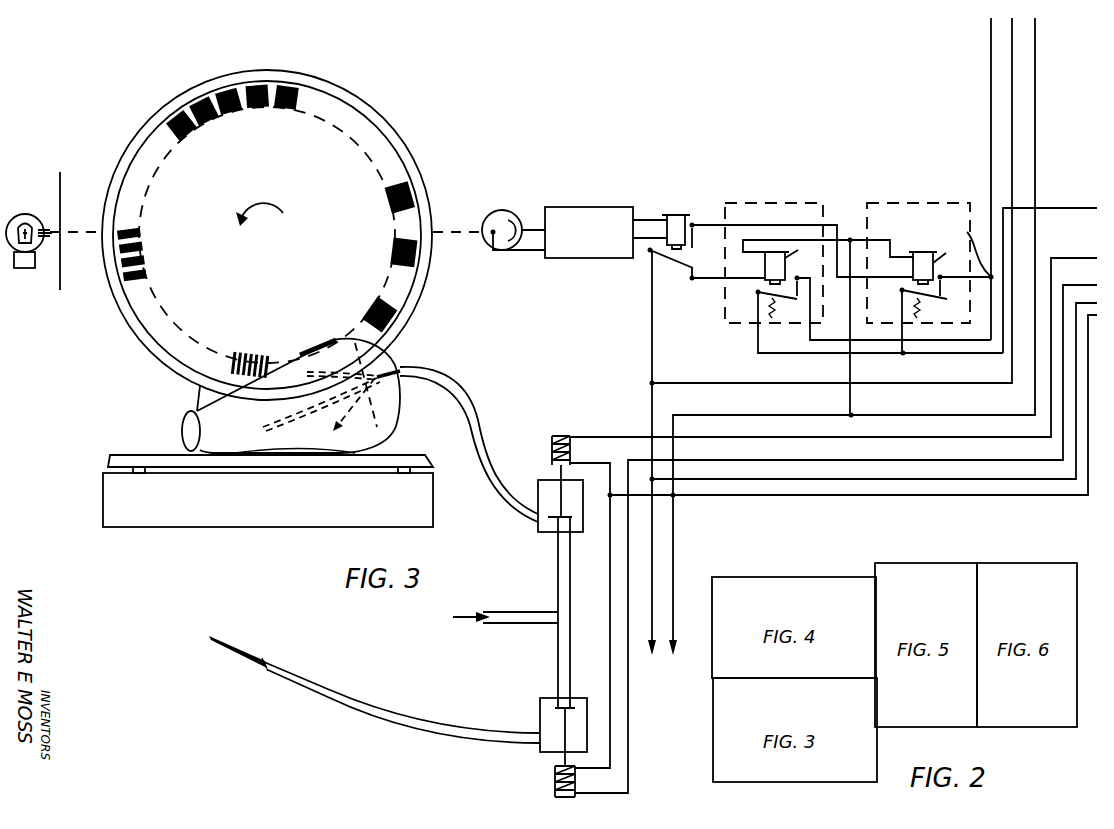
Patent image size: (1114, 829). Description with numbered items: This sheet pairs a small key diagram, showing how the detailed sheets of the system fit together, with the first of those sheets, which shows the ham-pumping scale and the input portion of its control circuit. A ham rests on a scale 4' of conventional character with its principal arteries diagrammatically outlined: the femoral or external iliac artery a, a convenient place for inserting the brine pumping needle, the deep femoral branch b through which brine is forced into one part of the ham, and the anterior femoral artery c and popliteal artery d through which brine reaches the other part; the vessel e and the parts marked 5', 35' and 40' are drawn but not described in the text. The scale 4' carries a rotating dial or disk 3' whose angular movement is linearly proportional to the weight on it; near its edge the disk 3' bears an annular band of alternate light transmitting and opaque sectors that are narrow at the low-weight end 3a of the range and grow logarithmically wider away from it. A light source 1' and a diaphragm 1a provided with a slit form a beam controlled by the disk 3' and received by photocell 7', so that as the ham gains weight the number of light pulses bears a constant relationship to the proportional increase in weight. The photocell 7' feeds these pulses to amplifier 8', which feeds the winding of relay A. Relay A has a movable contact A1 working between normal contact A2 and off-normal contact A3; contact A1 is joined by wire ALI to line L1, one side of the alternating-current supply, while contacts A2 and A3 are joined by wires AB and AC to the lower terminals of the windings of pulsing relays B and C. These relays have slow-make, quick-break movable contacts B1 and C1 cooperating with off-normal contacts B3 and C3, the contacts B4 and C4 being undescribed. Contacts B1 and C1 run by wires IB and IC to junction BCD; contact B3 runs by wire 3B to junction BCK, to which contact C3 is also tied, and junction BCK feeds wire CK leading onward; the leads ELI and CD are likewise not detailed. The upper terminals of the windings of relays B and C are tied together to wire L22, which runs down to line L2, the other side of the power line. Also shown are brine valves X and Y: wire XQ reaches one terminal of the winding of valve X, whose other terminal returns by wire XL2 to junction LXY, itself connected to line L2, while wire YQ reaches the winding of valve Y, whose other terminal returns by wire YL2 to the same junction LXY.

The light source 1' is at (29, 230).
The diaphragm 1a is at (64, 180).
The disk 3' is at (267, 235).
The end of range 3a is at (264, 344).
The scale 4' is at (268, 491).
The support post 5' is at (178, 418).
The photocell 7' is at (513, 214).
The amplifier 8' is at (606, 247).
The flexible tube 35' is at (469, 444).
The stylus / nozzle tube 40' is at (374, 685).
The femoral or external iliac artery a is at (382, 374).
The deep femoral branch b is at (342, 369).
The anterior femoral artery c is at (354, 407).
The popliteal artery d is at (321, 404).
The path e is at (366, 385).
The relay A is at (676, 222).
The movable contact A1 is at (671, 261).
The normal contact A2 is at (690, 279).
The off-normal contact A3 is at (695, 245).
The wire AL1 ALI is at (652, 332).
The wire AC is at (802, 243).
The wire AB is at (728, 273).
The relay B is at (794, 194).
The movable contact B1 is at (781, 304).
The off-normal contact B3 is at (805, 275).
The relay B contact B4 is at (799, 249).
The wire 3B is at (894, 310).
The wire 1B IB is at (791, 354).
The relay C is at (905, 194).
The movable contact C1 is at (928, 303).
The off-normal contact C3 is at (965, 286).
The relay C contact C4 is at (949, 255).
The junction BCK is at (961, 251).
The wire 1C IC is at (904, 333).
The junction BCD is at (908, 363).
The wire CK is at (991, 165).
The line ELI is at (1012, 140).
The wire L22 is at (1035, 108).
The line CD is at (1085, 208).
The wire XQ is at (833, 340).
The wire YQ is at (634, 761).
The line L1 is at (646, 570).
The line L2 is at (677, 553).
The brine valve X is at (553, 439).
The wire XL2 is at (590, 608).
The junction LXY is at (600, 500).
The wire YL2 is at (612, 683).
The brine valve Y is at (553, 780).